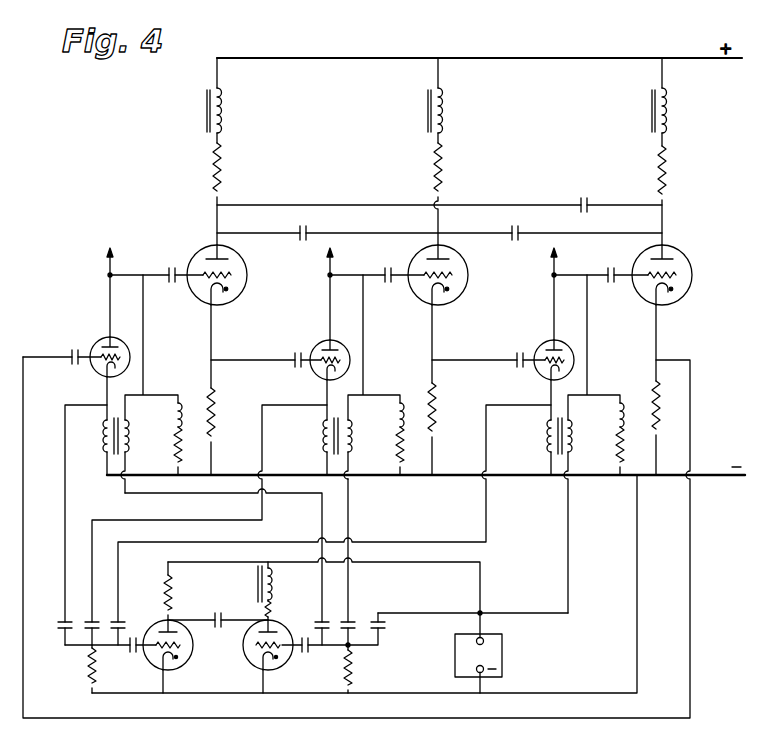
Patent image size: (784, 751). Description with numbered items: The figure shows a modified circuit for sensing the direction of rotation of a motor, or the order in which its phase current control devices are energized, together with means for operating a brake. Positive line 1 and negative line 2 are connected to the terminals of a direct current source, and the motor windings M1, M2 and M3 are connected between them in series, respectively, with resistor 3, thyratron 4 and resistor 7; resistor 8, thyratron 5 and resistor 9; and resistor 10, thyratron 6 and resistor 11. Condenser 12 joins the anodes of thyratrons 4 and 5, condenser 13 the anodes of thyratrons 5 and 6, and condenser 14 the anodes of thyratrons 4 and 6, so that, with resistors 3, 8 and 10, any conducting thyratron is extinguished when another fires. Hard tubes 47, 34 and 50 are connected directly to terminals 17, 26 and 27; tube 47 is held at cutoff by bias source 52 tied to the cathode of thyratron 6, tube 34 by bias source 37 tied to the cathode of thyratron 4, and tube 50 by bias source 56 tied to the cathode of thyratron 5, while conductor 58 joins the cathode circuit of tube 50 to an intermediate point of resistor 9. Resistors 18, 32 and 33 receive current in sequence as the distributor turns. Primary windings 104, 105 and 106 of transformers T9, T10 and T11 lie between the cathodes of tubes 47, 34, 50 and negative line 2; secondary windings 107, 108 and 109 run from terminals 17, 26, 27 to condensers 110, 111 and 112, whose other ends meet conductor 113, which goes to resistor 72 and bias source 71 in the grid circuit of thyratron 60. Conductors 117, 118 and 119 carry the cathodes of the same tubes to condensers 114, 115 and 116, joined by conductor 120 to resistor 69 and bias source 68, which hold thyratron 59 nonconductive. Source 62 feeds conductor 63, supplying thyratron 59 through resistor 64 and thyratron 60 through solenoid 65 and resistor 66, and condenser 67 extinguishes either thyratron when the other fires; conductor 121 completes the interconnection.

The positive line 1 is at (685, 58).
The negative line 2 is at (703, 475).
The resistor 3 is at (221, 168).
The thyratron 4 is at (247, 272).
The thyratron 5 is at (468, 270).
The thyratron 6 is at (692, 275).
The resistor 7 is at (216, 420).
The resistor 8 is at (442, 172).
The resistor 9 is at (436, 418).
The resistor 10 is at (666, 175).
The resistor 11 is at (660, 404).
The condenser 12 is at (307, 230).
The condenser 13 is at (519, 230).
The condenser 14 is at (588, 202).
The terminal 17 is at (106, 275).
The resistor 18 is at (181, 449).
The terminal 26 is at (327, 275).
The terminal 27 is at (551, 275).
The resistor 32 is at (403, 449).
The resistor 33 is at (623, 449).
The tube 34 is at (320, 345).
The bias source 37 is at (296, 365).
The tube 47 is at (121, 343).
The tube 50 is at (544, 344).
The bias source 52 is at (74, 365).
The bias source 56 is at (514, 365).
The conductor 58 is at (621, 718).
The thyratron 59 is at (180, 668).
The thyratron 60 is at (285, 667).
The direct current power source 62 is at (502, 656).
The conductor 63 is at (446, 563).
The resistor 64 is at (172, 592).
The solenoid 65 is at (272, 578).
The resistor 66 is at (264, 609).
The condenser 67 is at (218, 630).
The bias source 68 is at (136, 641).
The resistor 69 is at (88, 668).
The bias source 71 is at (310, 650).
The resistor 72 is at (353, 670).
The primary winding 104 is at (104, 450).
The primary winding 105 is at (322, 447).
The primary winding 106 is at (546, 447).
The secondary winding 107 is at (130, 448).
The secondary winding 108 is at (353, 448).
The secondary winding 109 is at (573, 448).
The condenser 110 is at (319, 622).
The condenser 111 is at (352, 619).
The condenser 112 is at (391, 627).
The conductor 113 is at (370, 649).
The condenser 114 is at (58, 622).
The condenser 115 is at (90, 621).
The condenser 116 is at (121, 621).
The conductor 117 is at (68, 524).
The conductor 118 is at (192, 520).
The conductor 119 is at (162, 544).
The conductor 120 is at (104, 649).
The conductor 121 is at (276, 494).
The motor winding M1 is at (221, 113).
The motor winding M2 is at (442, 113).
The motor winding M3 is at (666, 113).
The transformer T9 is at (137, 425).
The transformer T10 is at (357, 425).
The transformer T11 is at (577, 425).